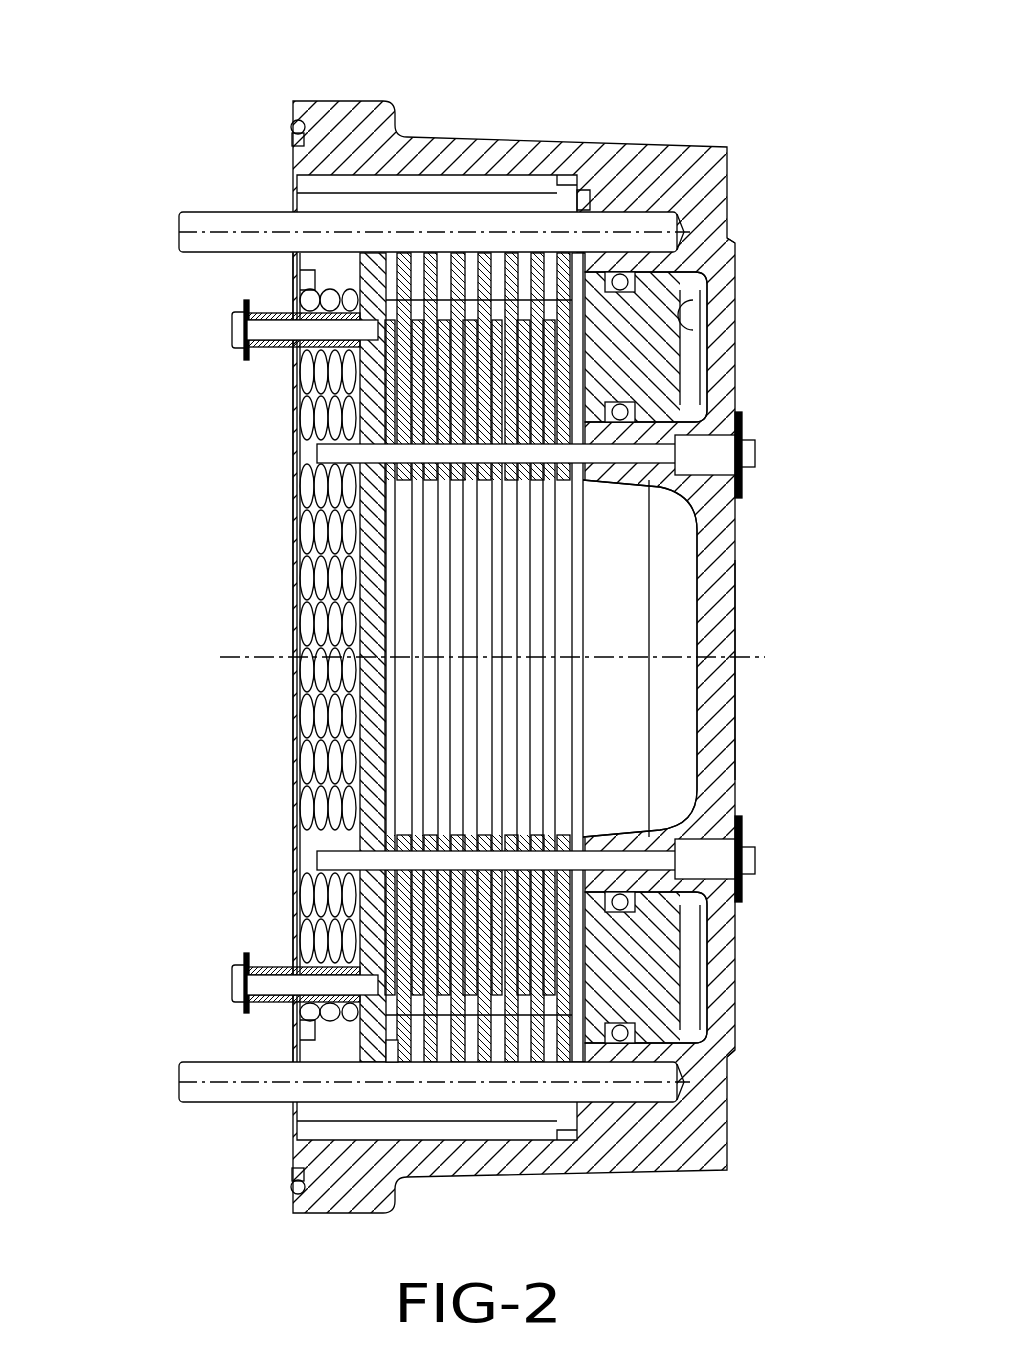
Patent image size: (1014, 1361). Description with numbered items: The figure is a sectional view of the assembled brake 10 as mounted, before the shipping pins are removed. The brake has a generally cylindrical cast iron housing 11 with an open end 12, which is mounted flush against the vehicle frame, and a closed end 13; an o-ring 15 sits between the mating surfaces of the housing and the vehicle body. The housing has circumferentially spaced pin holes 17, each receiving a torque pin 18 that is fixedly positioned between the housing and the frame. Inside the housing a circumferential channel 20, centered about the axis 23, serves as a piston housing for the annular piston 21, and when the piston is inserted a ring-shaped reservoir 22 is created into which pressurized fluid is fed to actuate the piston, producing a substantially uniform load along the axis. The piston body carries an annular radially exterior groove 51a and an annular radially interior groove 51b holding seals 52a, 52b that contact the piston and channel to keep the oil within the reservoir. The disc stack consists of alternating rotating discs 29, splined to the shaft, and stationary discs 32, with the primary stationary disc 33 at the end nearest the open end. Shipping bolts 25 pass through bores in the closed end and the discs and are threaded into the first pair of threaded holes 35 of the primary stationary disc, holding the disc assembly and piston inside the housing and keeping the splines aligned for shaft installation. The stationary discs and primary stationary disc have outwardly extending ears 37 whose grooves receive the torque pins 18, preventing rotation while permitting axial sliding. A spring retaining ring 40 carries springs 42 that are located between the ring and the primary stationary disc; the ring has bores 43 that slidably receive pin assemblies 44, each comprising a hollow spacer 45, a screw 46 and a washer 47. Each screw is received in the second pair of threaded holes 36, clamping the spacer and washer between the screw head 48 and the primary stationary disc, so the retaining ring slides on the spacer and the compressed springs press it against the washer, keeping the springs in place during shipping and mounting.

The brake 10 is at (85, 100).
The housing 11 is at (688, 143).
The open end 12 is at (293, 170).
The closed end 13 is at (737, 690).
The o-ring 15 is at (292, 122).
The pin hole 17 is at (607, 212).
The torque pin 18 is at (178, 208).
The circumferential channel 20 is at (700, 320).
The annular piston 21 is at (655, 975).
The reservoir 22 is at (700, 1012).
The axis 23 is at (680, 655).
The shipping bolt 25 is at (748, 455).
The rotating disc 29 is at (497, 278).
The stationary disc 32 is at (458, 250).
The primary stationary disc 33 is at (372, 250).
The first pair of threaded holes 35 is at (365, 862).
The second pair of threaded holes 36 is at (357, 328).
The ears 37 is at (397, 1045).
The spring retaining ring 40 is at (288, 610).
The spring 42 is at (330, 763).
The bore 43 is at (262, 340).
The pin assembly 44 is at (263, 306).
The spacer 45 is at (270, 1002).
The screw 46 is at (270, 983).
The washer 47 is at (262, 968).
The screw head 48 is at (262, 990).
The annular radially exterior groove 51a is at (626, 284).
The annular radially interior groove 51b is at (626, 411).
The seal 52a is at (626, 1035).
The seal 52b is at (626, 903).